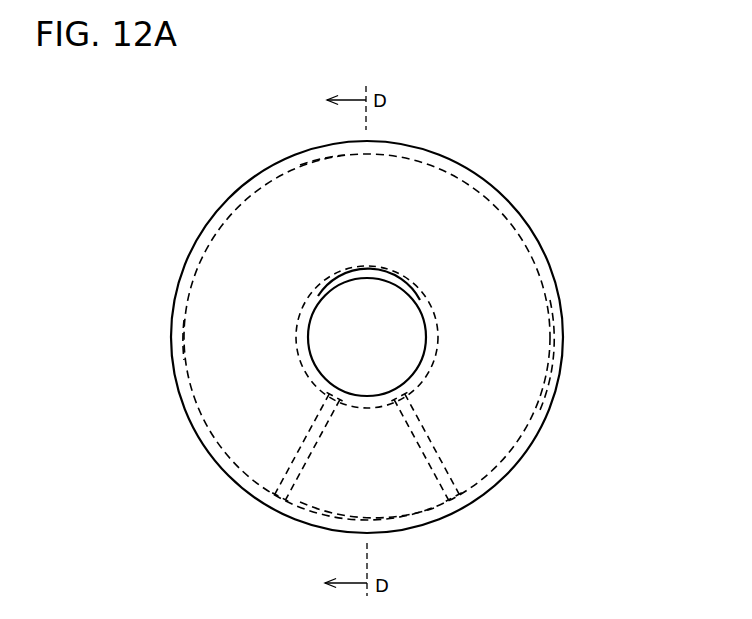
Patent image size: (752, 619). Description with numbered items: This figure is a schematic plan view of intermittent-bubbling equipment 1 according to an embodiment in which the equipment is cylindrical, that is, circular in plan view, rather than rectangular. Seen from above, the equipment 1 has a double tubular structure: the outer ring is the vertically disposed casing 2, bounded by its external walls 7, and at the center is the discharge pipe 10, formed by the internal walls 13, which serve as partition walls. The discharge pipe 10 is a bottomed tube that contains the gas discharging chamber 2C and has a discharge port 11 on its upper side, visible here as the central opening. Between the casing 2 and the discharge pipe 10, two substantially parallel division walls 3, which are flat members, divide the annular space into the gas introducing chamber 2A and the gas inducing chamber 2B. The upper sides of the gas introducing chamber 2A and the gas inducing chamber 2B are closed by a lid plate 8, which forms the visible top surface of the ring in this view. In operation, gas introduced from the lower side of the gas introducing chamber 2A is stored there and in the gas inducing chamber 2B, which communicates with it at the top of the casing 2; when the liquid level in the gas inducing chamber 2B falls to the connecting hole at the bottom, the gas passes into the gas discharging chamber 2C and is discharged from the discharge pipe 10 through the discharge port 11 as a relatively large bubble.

The intermittent-bubbling equipment 1 is at (585, 162).
The casing 2 is at (547, 253).
The gas introducing chamber 2A is at (537, 360).
The gas inducing chamber 2B is at (416, 494).
The gas discharging chamber 2C is at (402, 307).
The division walls 3 is at (300, 485).
The external walls 7 is at (200, 423).
The lid plate 8 is at (327, 173).
The discharge pipe 10 is at (438, 322).
The discharge port 11 is at (323, 370).
The internal walls 13 is at (300, 347).